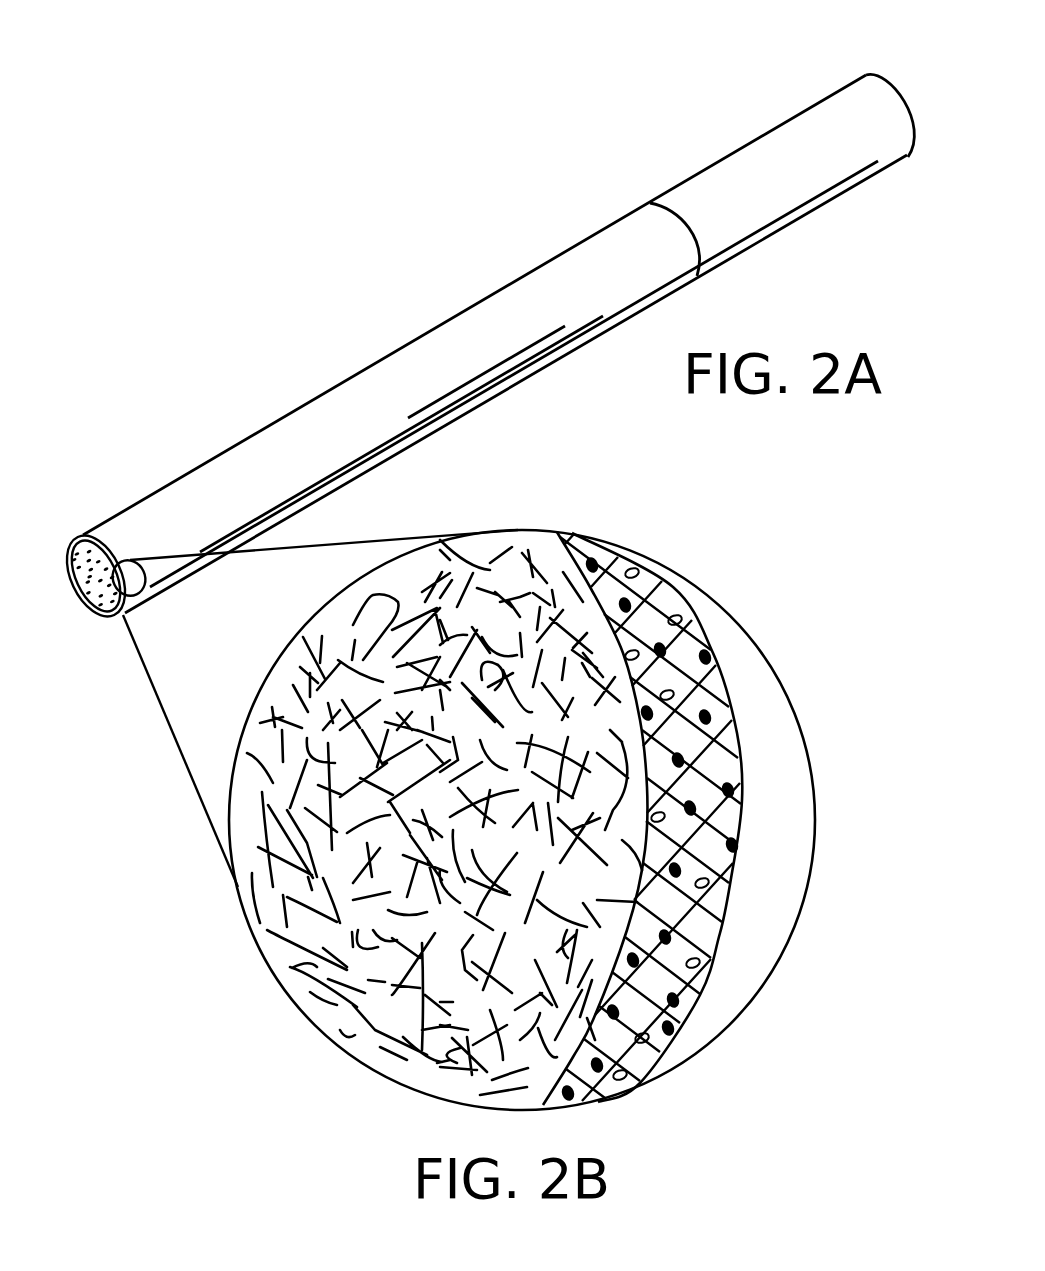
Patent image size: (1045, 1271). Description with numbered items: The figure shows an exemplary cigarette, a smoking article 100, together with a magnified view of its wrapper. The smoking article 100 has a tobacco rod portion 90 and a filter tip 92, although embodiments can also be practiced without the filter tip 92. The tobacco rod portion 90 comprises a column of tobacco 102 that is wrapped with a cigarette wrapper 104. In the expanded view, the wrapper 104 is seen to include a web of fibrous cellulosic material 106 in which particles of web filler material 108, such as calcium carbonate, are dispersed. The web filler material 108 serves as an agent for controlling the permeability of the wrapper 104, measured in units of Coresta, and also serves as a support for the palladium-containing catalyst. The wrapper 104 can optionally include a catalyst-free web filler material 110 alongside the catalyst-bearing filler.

In FIG. 2A, the smoking article 100 is at (262, 208).
In FIG. 2A, the tobacco rod portion 90 is at (437, 348).
In FIG. 2A, the filter tip 92 is at (785, 138).
In FIG. 2A, the column of tobacco 102 is at (80, 600).
In FIG. 2B, the column of tobacco 102 is at (297, 933).
In FIG. 2A, the cigarette wrapper 104 is at (208, 495).
In FIG. 2B, the cigarette wrapper 104 is at (766, 803).
In FIG. 2B, the web of fibrous cellulosic material 106 is at (713, 850).
In FIG. 2B, the web filler material 108 is at (708, 652).
In FIG. 2B, the catalyst-free web filler material 110 is at (678, 613).